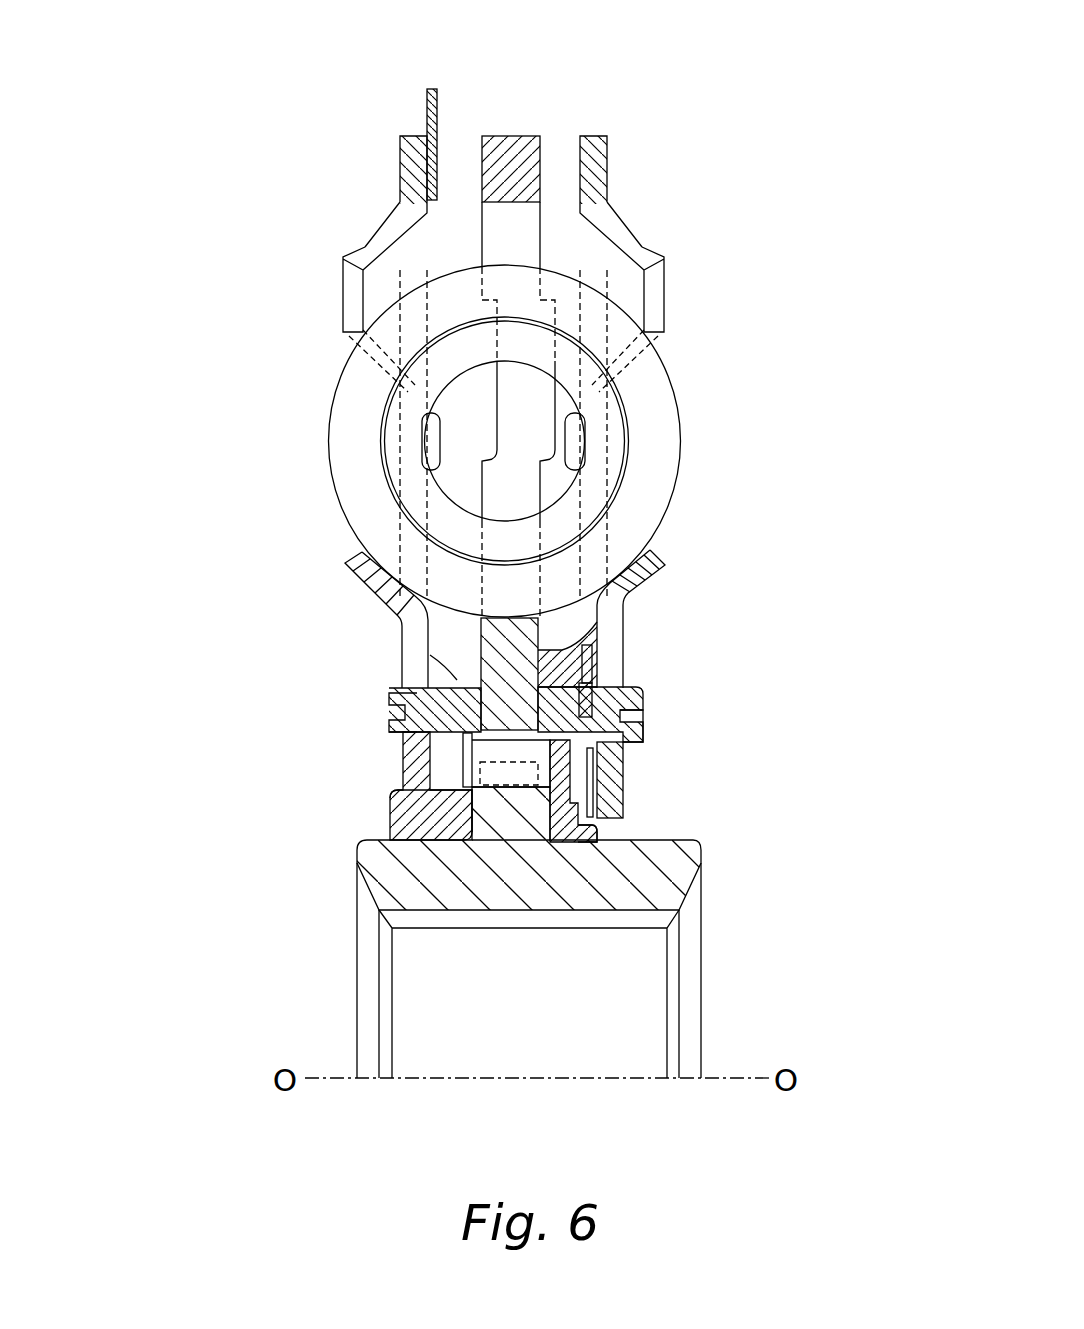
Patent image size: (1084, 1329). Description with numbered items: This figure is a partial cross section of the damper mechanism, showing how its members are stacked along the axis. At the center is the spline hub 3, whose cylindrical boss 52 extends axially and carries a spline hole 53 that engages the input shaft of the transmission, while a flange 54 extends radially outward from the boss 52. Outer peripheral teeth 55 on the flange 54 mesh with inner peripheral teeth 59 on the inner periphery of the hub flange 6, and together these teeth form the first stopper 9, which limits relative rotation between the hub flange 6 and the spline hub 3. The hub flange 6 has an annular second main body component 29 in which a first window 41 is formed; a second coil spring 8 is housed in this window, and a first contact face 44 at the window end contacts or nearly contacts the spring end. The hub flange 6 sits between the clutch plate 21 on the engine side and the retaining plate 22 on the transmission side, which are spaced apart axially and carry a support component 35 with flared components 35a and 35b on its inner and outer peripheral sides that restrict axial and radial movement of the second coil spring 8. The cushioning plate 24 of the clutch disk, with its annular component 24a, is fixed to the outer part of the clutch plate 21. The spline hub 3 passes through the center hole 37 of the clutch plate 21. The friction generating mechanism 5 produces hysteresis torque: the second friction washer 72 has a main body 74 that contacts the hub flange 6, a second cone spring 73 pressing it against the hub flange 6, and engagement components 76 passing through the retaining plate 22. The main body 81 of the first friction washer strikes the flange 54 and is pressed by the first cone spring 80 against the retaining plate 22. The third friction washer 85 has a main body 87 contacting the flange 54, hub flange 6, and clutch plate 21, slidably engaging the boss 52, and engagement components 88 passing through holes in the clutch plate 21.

The spline hub 3 is at (592, 983).
The friction generating mechanism 5 is at (676, 784).
The hub flange 6 is at (578, 367).
The second coil spring 8 is at (692, 380).
The first stopper 9 is at (390, 722).
The clutch plate 21 is at (397, 167).
The retaining plate 22 is at (617, 157).
The cushioning plate 24 is at (376, 105).
The annular component 24a is at (430, 118).
The second main body component 29 is at (520, 157).
The support component 35 is at (688, 334).
The flared component 35a is at (362, 552).
The flared component 35b is at (382, 262).
The center hole 37 is at (405, 812).
The first window 41 is at (545, 402).
The first contact face 44 is at (537, 425).
The boss 52 is at (655, 885).
The spline hole 53 is at (598, 920).
The flange 54 is at (522, 840).
The outer peripheral teeth 55 is at (465, 752).
The inner peripheral teeth 59 is at (480, 773).
The second friction washer 72 is at (546, 673).
The second cone spring 73 is at (600, 650).
The main body 74 is at (627, 622).
The engagement component 76 is at (644, 700).
The first cone spring 80 is at (623, 778).
The main body 81 is at (598, 836).
The third friction washer 85 is at (457, 680).
The main body 87 is at (425, 825).
The engagement component 88 is at (389, 693).